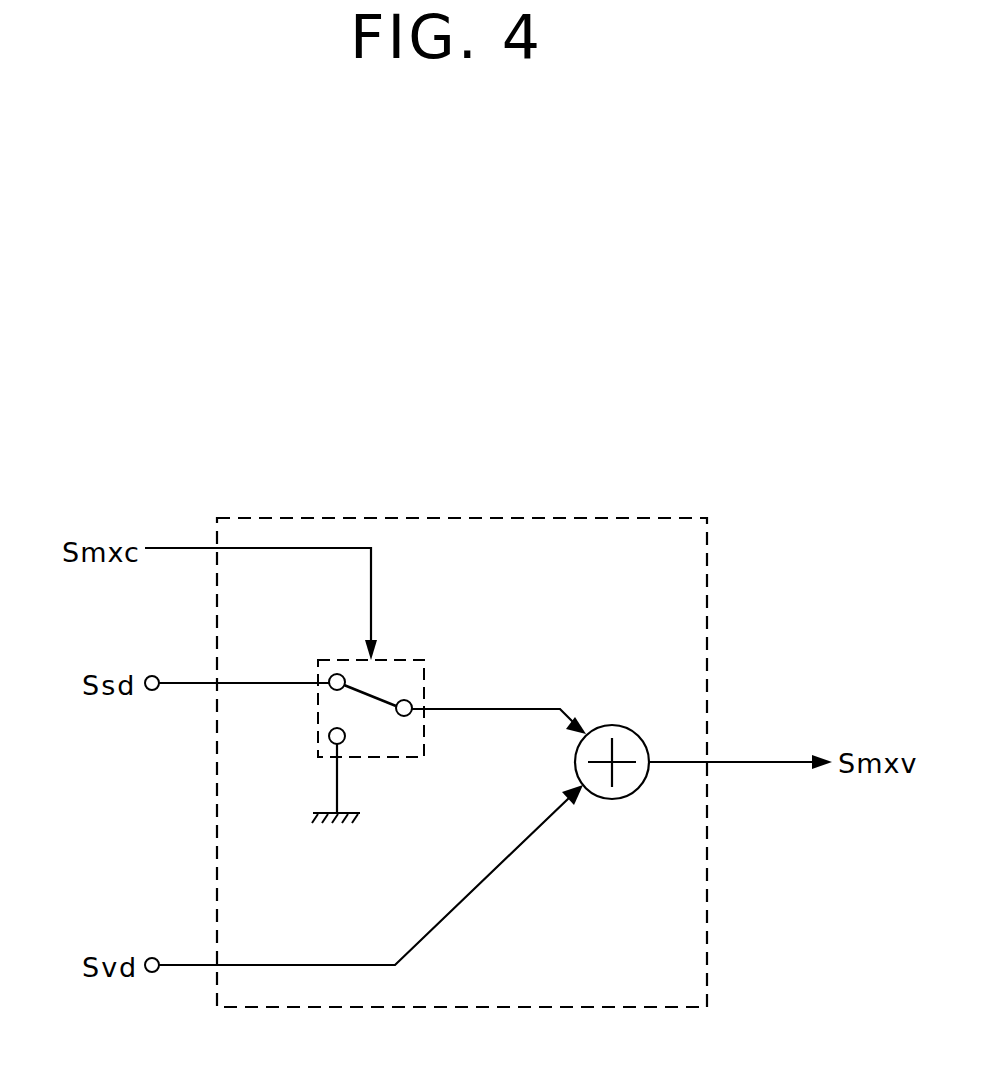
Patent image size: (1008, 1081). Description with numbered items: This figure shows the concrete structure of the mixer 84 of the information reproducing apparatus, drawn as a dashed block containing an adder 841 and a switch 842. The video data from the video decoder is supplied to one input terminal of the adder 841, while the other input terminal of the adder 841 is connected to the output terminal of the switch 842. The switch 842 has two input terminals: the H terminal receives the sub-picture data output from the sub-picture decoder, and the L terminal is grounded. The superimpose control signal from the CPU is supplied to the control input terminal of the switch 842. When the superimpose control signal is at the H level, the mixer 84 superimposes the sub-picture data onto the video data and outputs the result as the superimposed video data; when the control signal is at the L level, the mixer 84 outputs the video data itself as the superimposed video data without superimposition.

The mixer 84 is at (648, 1007).
The adder 841 is at (618, 725).
The switch 842 is at (408, 660).